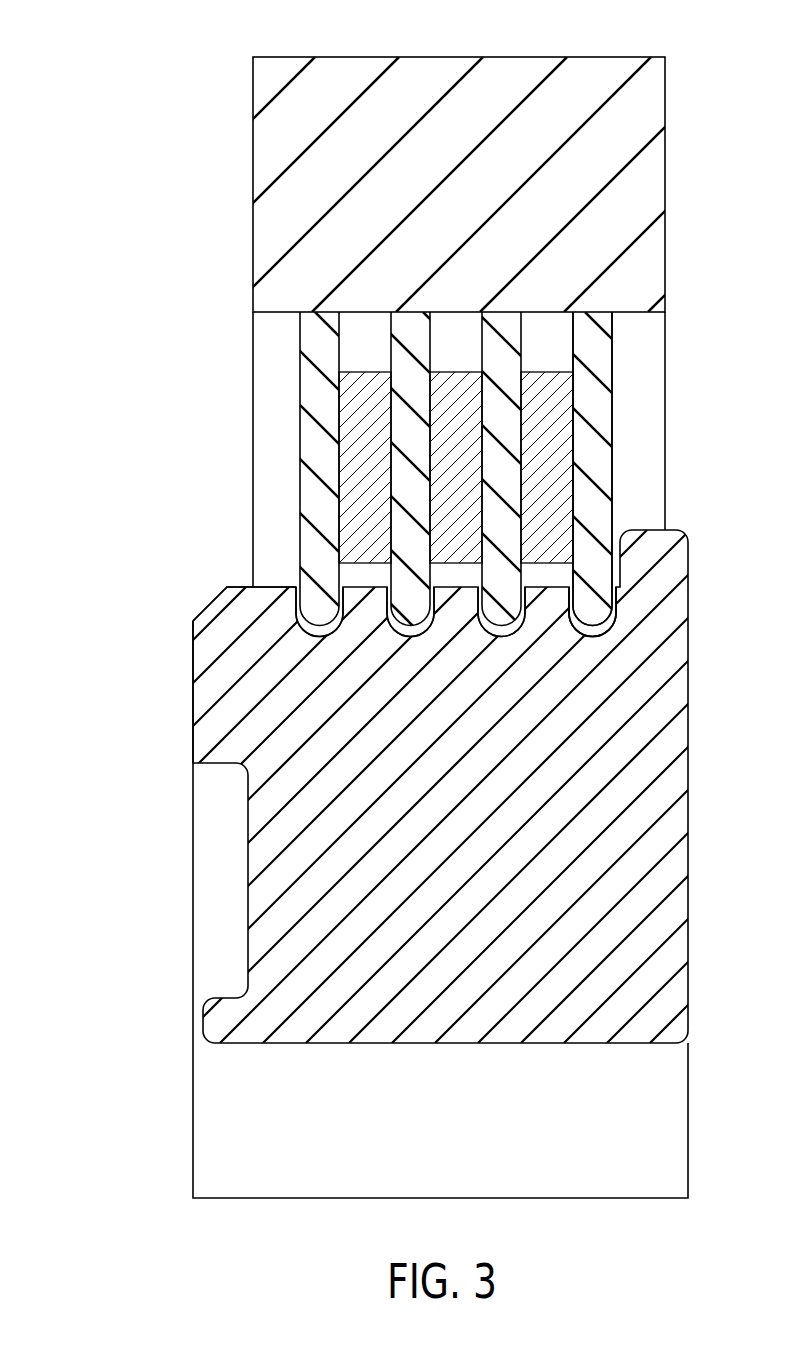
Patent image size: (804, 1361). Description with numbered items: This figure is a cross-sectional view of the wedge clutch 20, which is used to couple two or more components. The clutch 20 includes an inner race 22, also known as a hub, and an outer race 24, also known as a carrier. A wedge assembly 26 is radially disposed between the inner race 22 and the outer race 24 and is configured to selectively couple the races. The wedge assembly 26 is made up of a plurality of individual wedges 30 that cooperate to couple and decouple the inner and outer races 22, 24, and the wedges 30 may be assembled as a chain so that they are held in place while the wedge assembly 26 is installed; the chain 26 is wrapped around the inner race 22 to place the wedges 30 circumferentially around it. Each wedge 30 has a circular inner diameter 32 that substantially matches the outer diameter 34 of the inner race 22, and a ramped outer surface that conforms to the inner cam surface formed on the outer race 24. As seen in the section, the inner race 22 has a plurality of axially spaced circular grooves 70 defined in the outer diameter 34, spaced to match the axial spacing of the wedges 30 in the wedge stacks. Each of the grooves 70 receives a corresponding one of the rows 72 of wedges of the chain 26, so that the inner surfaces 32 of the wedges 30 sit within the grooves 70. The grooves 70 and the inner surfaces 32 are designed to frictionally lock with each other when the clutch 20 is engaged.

The clutch 20 is at (126, 96).
The inner race 22 is at (670, 950).
The outer race 24 is at (645, 120).
The wedge assembly 26 is at (310, 363).
The wedges 30 is at (605, 397).
The circular inner diameter 32 is at (306, 624).
The outer diameter 34 is at (265, 587).
The grooves 70 is at (608, 627).
The rows of wedges 72 is at (605, 343).